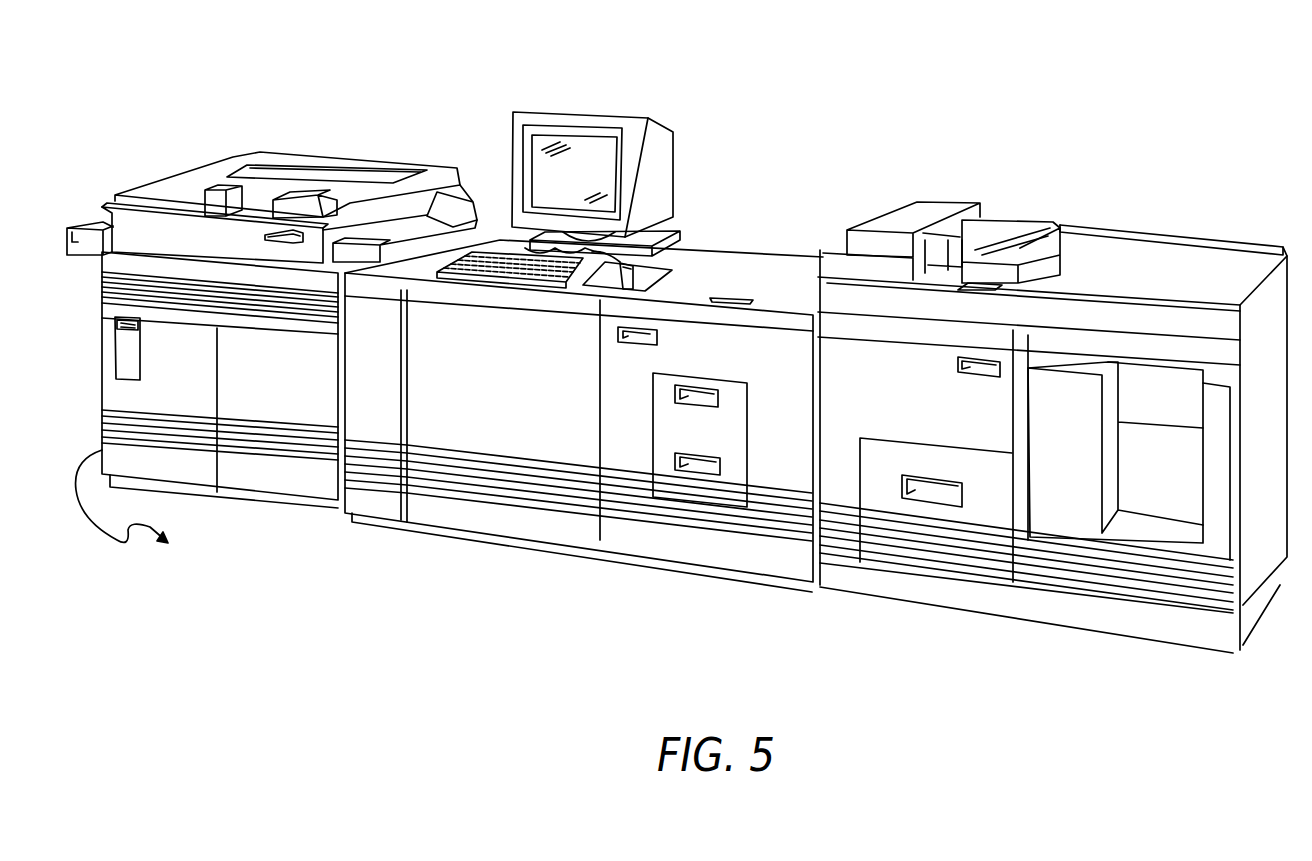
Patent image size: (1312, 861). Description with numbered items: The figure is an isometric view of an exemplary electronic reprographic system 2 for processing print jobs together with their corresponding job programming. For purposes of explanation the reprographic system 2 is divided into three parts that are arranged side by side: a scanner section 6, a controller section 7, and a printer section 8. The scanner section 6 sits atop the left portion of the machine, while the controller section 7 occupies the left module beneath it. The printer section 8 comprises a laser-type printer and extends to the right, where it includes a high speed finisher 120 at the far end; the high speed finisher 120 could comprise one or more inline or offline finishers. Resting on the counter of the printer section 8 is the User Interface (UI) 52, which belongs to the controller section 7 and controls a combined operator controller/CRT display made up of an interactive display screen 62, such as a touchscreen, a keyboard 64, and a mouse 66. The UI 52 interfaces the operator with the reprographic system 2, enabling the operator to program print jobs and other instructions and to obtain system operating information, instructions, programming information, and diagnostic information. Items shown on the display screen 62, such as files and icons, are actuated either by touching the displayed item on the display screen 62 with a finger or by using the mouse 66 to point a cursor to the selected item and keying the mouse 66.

The electronic reprographic system 2 is at (773, 69).
The scanner section 6 is at (325, 146).
The controller section 7 is at (95, 397).
The printer section 8 is at (1243, 664).
The user interface 52 is at (602, 113).
The interactive display screen 62 is at (540, 180).
The keyboard 64 is at (512, 277).
The mouse 66 is at (600, 288).
The high speed finisher 120 is at (1132, 243).